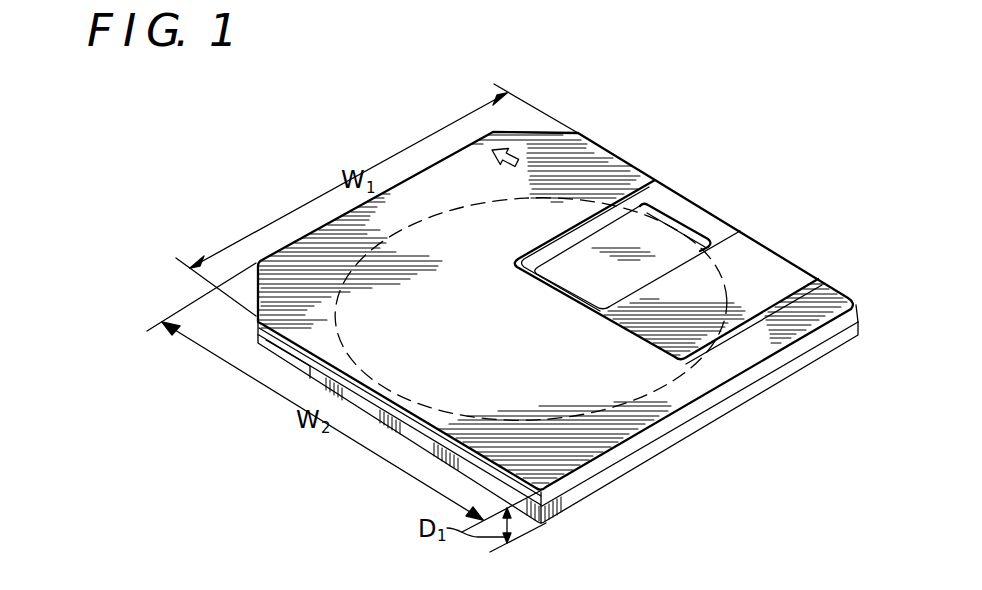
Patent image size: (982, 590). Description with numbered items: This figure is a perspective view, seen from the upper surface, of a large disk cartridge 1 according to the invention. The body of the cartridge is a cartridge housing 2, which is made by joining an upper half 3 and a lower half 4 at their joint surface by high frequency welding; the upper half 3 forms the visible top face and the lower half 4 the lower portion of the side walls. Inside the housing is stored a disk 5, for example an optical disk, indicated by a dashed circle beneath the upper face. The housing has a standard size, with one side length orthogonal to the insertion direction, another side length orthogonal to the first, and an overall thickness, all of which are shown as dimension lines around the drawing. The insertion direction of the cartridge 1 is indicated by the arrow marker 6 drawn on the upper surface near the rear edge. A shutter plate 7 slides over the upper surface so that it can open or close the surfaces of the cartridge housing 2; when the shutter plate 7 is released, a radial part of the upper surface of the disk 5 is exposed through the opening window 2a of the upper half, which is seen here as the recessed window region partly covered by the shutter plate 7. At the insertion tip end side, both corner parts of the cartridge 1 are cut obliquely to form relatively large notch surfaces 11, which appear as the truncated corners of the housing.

The first disk cartridge 1 is at (702, 432).
The cartridge housing 2 is at (835, 361).
The opening window 2a is at (677, 205).
The upper half 3 is at (781, 362).
The lower half 4 is at (783, 378).
The disk 5 is at (670, 248).
The arrow marker 6 is at (568, 134).
The shutter plate 7 is at (780, 268).
The notch surfaces 11 is at (547, 131).